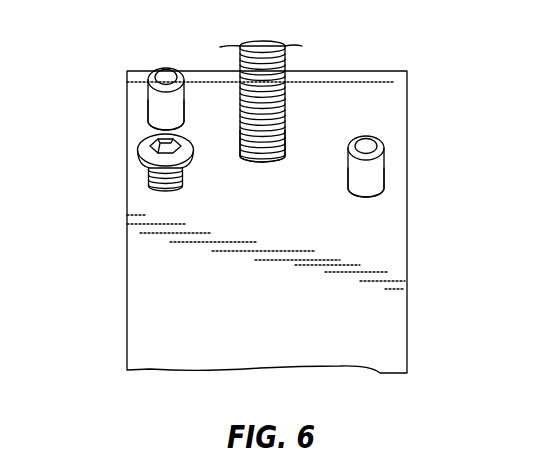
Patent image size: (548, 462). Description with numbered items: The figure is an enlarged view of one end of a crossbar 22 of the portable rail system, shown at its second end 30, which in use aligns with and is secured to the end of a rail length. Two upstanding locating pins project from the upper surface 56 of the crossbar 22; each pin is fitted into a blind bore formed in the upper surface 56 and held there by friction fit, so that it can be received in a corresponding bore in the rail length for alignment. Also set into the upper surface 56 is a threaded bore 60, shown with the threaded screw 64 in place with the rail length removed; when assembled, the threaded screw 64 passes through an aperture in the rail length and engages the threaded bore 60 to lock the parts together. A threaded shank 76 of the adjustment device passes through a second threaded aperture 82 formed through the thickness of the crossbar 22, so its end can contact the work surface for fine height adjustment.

The crossbar 22 is at (390, 250).
The second end 30 is at (388, 99).
The upper surface 56 is at (275, 311).
The threaded bore 60 is at (150, 183).
The threaded screw 64 is at (150, 150).
The threaded shank 76 is at (250, 164).
The second threaded aperture 82 is at (277, 162).